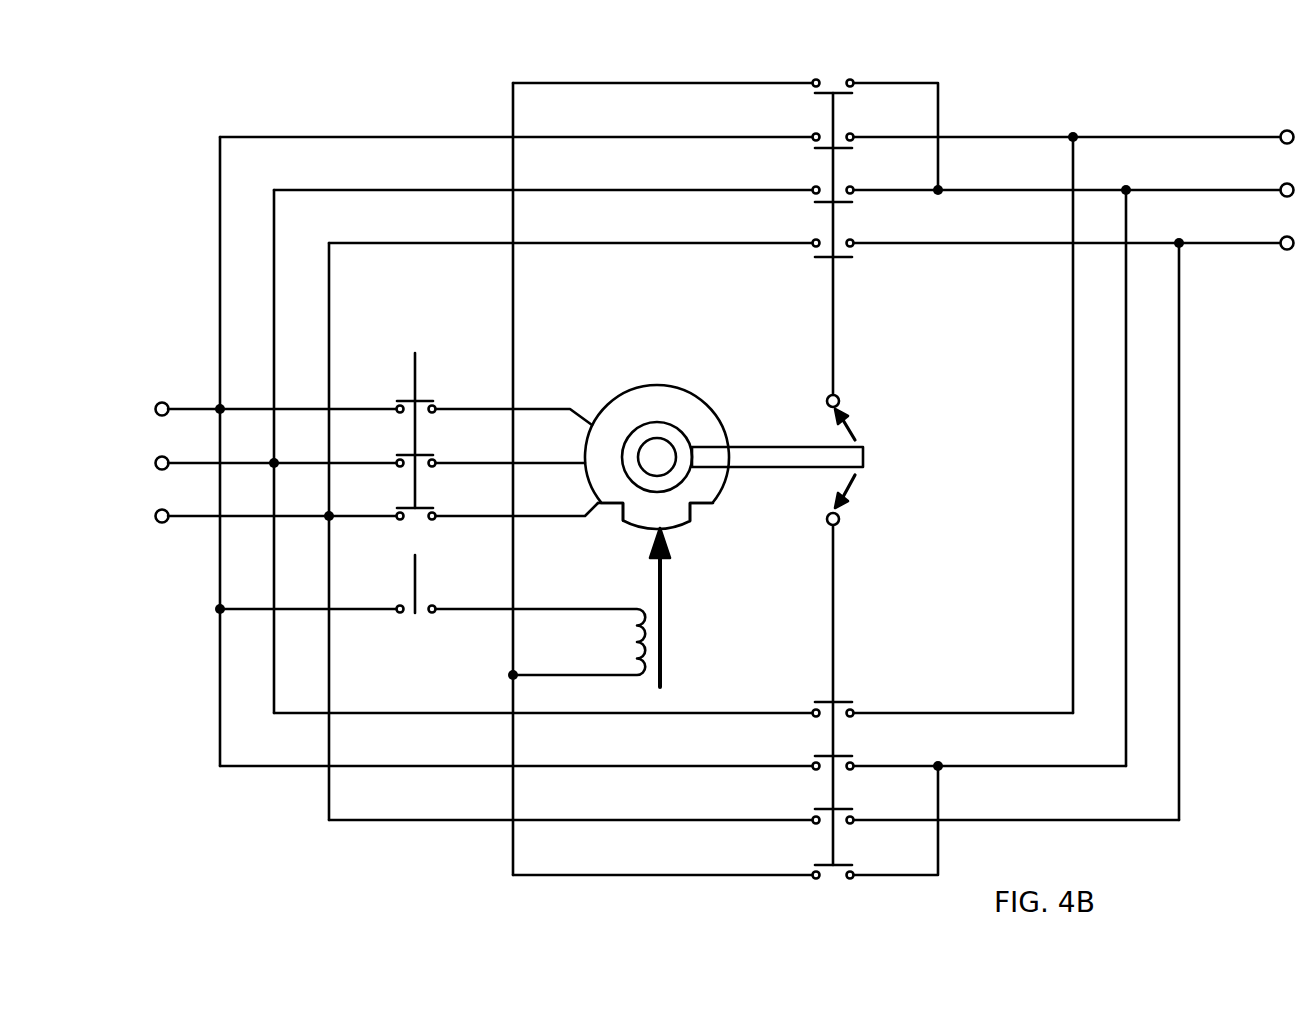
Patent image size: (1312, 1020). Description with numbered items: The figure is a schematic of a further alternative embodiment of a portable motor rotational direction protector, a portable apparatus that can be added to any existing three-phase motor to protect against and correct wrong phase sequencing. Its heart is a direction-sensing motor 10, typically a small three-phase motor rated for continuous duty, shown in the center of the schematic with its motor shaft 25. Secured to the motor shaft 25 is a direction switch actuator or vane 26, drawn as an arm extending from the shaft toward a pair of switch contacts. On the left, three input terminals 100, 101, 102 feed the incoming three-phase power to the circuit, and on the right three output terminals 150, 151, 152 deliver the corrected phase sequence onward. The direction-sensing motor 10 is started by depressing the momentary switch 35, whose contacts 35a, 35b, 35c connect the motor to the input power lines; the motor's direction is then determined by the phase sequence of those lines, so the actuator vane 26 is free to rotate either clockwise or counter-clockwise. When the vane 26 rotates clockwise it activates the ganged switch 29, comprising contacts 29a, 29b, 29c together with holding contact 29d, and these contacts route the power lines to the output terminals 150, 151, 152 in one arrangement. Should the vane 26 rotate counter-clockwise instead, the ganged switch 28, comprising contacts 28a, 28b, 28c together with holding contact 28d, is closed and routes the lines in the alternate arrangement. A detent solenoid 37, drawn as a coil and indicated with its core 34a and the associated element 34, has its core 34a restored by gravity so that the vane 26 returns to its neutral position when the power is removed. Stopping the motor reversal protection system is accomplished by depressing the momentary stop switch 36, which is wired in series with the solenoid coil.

The direction-sensing motor 10 is at (683, 390).
The motor shaft 25 is at (655, 455).
The direction switch actuator vane 26 is at (790, 446).
The ganged switch 28 is at (833, 270).
The contact 28a is at (812, 241).
The contact 28b is at (812, 187).
The contact 28c is at (812, 134).
The contact of first contactor 28d is at (812, 80).
The ganged switch 29 is at (833, 682).
The contact 29a is at (812, 718).
The contact 29b is at (812, 772).
The contact 29c is at (812, 825).
The holding contact 29d is at (812, 880).
The spring 34 is at (663, 568).
The core 34a is at (693, 508).
The momentary switch 35 is at (415, 353).
The relay contact 35a is at (396, 406).
The relay contact 35b is at (396, 460).
The relay contact 35c is at (396, 513).
The momentary stop switch 36 is at (436, 603).
The detent solenoid 37 is at (632, 600).
The power supply terminal 100 is at (167, 403).
The power supply terminal 101 is at (167, 457).
The power supply terminal 102 is at (165, 522).
The output terminal 150 is at (1281, 130).
The output terminal 151 is at (1279, 186).
The output terminal 152 is at (1281, 250).